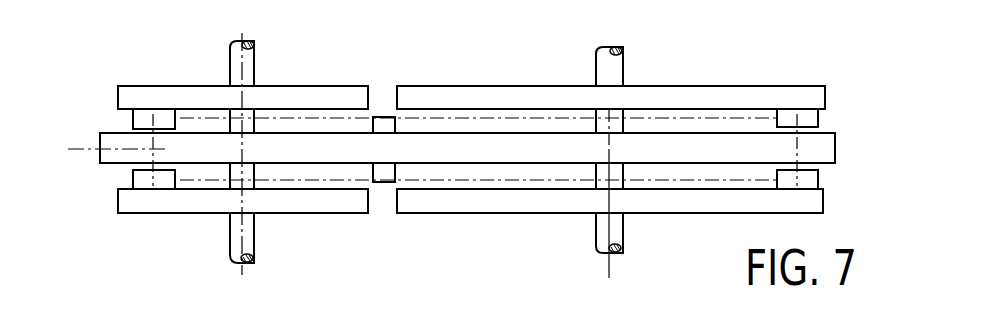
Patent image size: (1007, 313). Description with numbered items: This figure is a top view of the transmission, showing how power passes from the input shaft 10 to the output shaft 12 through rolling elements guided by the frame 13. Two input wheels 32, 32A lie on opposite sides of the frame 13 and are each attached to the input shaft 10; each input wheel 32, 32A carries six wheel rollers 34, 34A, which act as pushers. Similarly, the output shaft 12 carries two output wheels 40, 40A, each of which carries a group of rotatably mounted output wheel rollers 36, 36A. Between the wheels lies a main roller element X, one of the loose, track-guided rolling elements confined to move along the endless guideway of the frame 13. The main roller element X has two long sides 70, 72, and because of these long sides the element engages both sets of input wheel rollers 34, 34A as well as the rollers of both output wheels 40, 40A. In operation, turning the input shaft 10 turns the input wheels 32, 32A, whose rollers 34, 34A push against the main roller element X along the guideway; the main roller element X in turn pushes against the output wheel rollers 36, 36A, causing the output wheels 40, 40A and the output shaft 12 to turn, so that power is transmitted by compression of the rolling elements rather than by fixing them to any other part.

The input shaft 10 is at (250, 232).
The output shaft 12 is at (596, 237).
The frame 13 is at (110, 132).
The input wheel 32 is at (328, 215).
The input wheel 32A is at (288, 85).
The input wheel rollers 34 is at (132, 178).
The input wheel rollers 34A is at (132, 122).
The output wheel rollers 36 is at (820, 175).
The output wheel rollers 36A is at (820, 113).
The output wheel 40 is at (715, 215).
The output wheel 40A is at (702, 85).
The long side 70 is at (380, 182).
The long side 72 is at (380, 117).
The main roller element X is at (397, 128).